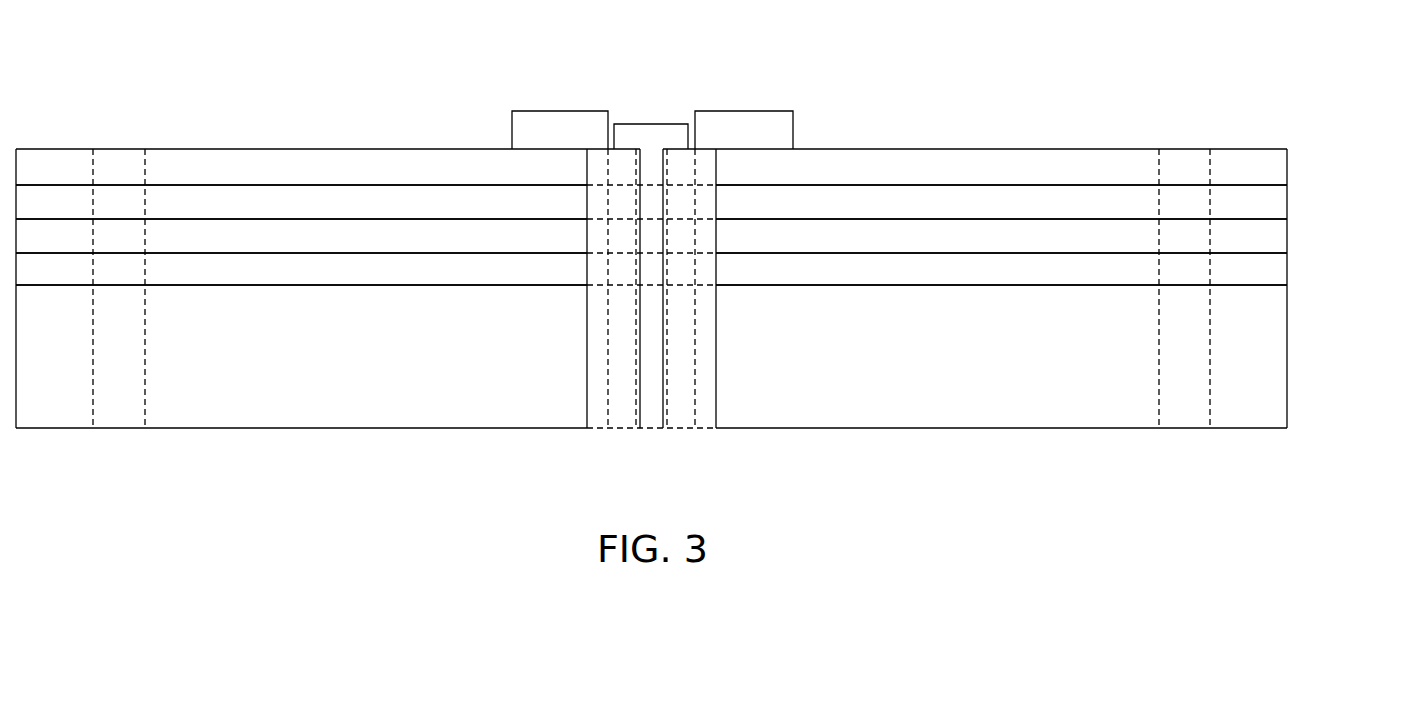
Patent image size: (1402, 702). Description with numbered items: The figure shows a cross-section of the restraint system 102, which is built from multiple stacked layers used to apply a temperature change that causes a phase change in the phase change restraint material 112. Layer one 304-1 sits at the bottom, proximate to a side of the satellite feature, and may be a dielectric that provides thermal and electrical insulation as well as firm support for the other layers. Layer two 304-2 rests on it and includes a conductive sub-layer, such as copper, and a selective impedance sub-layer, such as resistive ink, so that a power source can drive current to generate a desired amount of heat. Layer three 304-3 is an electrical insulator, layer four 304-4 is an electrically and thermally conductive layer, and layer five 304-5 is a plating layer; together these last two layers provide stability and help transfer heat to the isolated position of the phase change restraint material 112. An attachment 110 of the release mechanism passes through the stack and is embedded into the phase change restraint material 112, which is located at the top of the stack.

The restraint system 102 is at (168, 94).
The attachment 110 is at (650, 428).
The phase change restraint material 112 is at (793, 133).
The layer #1 304-1 is at (1287, 350).
The layer #2 304-2 is at (1287, 272).
The layer #3 304-3 is at (1287, 233).
The layer #4 304-4 is at (1287, 197).
The layer #5 304-5 is at (1287, 163).